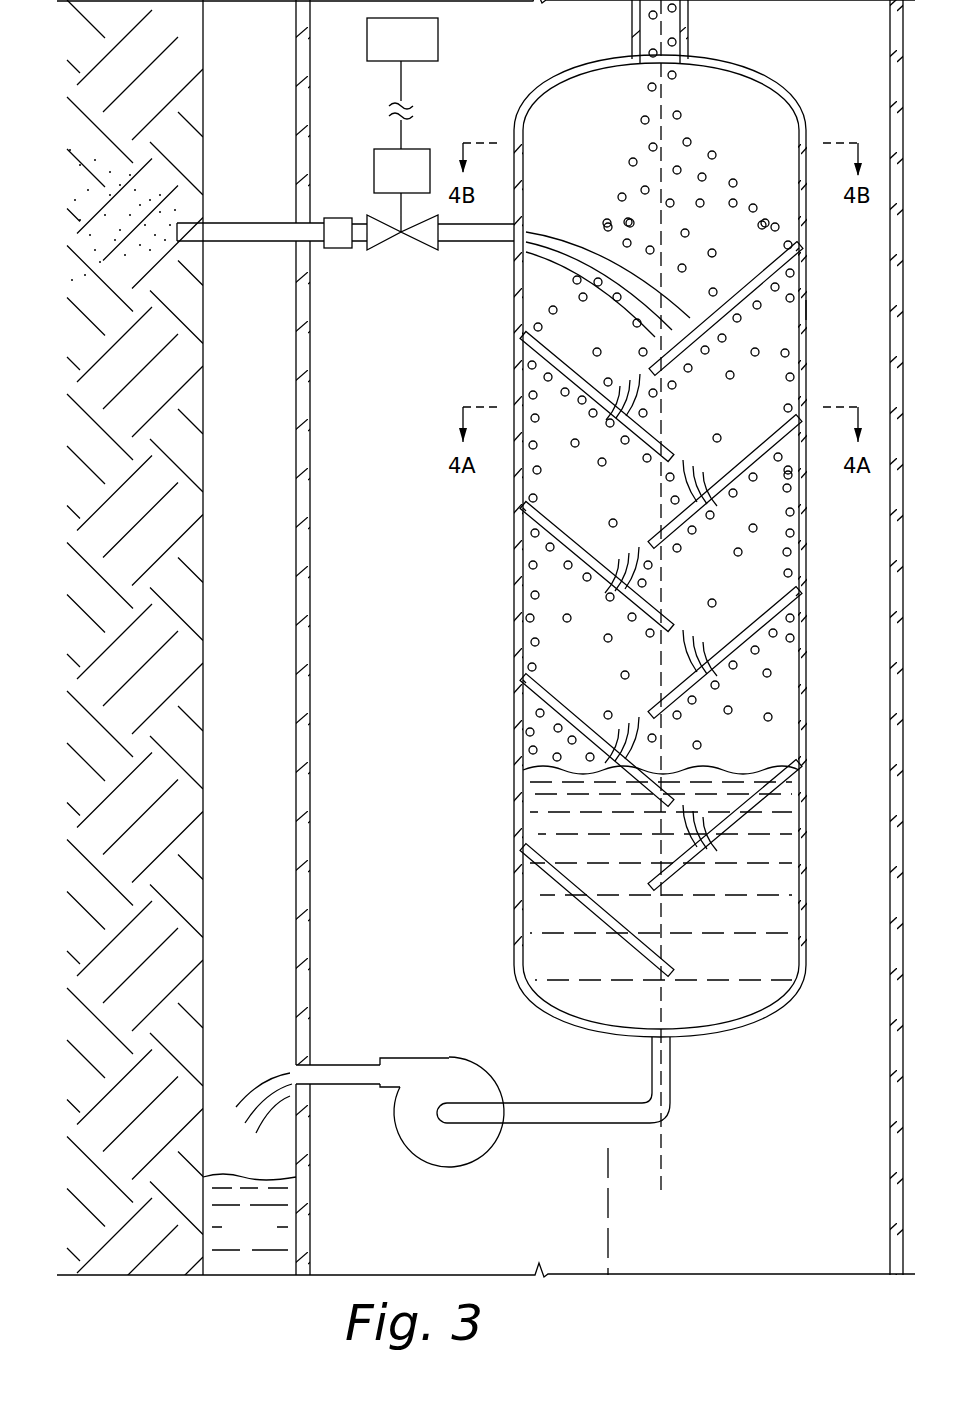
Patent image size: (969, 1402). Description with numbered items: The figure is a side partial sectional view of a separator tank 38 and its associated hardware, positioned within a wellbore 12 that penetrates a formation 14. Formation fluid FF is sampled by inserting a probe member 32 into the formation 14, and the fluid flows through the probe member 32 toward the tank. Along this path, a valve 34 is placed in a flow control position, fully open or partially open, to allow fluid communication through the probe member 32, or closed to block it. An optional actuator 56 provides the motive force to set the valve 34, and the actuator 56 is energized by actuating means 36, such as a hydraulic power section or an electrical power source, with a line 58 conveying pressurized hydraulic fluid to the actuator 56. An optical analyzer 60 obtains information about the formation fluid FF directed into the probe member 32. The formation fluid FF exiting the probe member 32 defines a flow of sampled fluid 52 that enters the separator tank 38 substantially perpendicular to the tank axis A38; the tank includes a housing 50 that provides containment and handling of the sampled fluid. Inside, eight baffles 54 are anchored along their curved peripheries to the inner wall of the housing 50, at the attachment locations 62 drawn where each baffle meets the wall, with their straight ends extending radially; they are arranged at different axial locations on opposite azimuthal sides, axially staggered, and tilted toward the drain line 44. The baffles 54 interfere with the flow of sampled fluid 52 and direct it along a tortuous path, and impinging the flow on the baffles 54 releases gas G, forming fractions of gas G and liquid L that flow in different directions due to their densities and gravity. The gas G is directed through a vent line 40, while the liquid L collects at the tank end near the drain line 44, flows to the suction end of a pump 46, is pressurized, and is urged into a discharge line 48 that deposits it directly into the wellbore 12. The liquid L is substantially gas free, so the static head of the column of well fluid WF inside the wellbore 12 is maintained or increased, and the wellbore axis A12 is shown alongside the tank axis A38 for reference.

The wellbore 12 is at (266, 812).
The formation 14 is at (125, 652).
The probe member 32 is at (237, 222).
The valve 34 is at (430, 250).
The actuating means 36 is at (415, 52).
The separator tank 38 is at (762, 63).
The vent line 40 is at (636, 42).
The drain line 44 is at (545, 1123).
The pump 46 is at (437, 1058).
The discharge line 48 is at (341, 1065).
The housing 50 is at (806, 310).
The flow of sampled fluid 52 is at (573, 230).
The baffles 54 is at (573, 890).
The actuator 56 is at (415, 184).
The line 58 is at (401, 82).
The optical analyzer 60 is at (337, 250).
The baffle attachment 62 is at (523, 682).
The formation fluid FF is at (122, 228).
The gas G is at (691, 142).
The liquid L is at (731, 974).
The well fluid WF is at (268, 1240).
The axis of separator tank A38 is at (662, 1168).
The wellbore axis A12 is at (609, 1246).